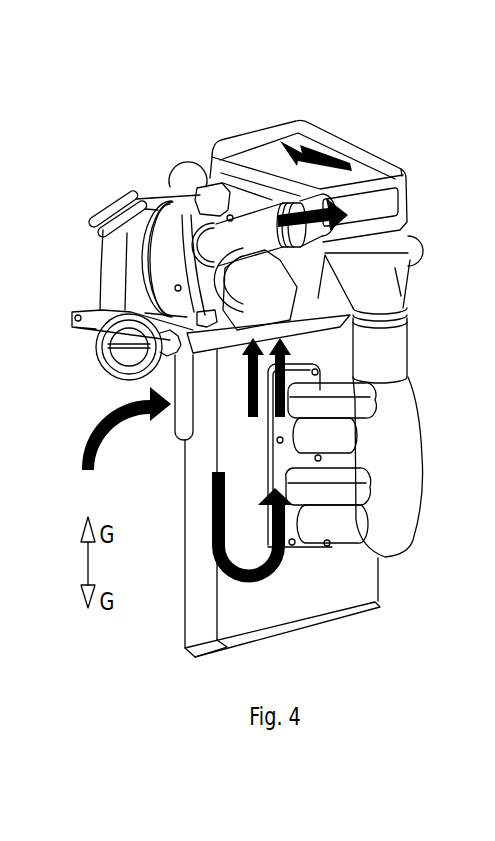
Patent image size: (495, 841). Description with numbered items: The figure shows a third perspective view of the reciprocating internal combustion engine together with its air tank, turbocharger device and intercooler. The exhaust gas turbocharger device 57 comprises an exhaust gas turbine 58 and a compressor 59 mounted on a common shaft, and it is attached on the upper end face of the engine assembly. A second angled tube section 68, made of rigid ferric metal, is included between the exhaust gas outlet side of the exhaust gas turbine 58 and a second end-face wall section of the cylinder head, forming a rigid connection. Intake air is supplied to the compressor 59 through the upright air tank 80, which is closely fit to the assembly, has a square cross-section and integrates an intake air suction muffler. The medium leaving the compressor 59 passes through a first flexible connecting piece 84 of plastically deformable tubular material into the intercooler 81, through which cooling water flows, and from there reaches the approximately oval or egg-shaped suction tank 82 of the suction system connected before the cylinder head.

The exhaust gas turbocharger device 57 is at (104, 197).
The exhaust gas turbine 58 is at (160, 198).
The compressor 59 is at (213, 223).
The second angled tube section 68 is at (77, 331).
The air tank 80 is at (356, 622).
The intercooler 81 is at (309, 112).
The suction tank 82 is at (421, 386).
The first flexible connecting piece 84 is at (296, 186).